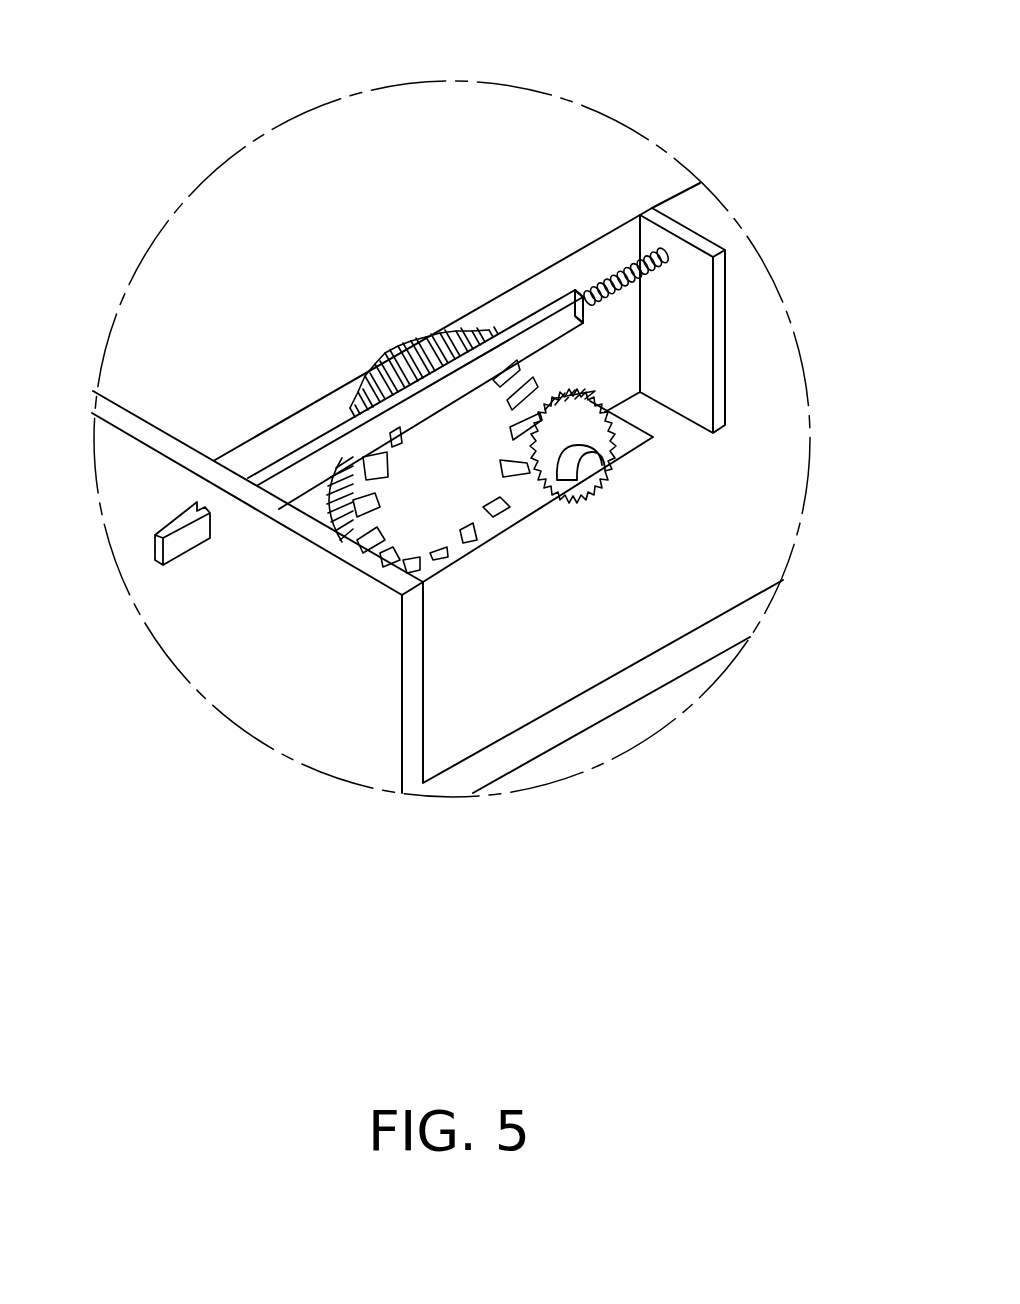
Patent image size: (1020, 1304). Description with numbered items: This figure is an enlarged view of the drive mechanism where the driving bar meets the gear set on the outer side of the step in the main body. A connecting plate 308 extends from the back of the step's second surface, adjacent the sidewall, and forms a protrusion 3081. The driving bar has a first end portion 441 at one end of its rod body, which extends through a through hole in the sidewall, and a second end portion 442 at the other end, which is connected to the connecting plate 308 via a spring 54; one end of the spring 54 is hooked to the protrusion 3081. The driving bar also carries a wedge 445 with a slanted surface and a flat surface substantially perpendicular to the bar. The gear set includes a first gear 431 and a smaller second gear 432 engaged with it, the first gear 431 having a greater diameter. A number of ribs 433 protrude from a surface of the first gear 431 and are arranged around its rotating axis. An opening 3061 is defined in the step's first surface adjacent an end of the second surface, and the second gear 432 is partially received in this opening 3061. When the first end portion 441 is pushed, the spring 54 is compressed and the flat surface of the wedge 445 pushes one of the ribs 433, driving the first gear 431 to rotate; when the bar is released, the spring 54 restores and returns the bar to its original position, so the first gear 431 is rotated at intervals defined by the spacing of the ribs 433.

The connecting plate 308 is at (687, 307).
The protrusion 3081 is at (673, 252).
The second end portion 442 is at (563, 318).
The spring 54 is at (560, 317).
The wedge 445 is at (428, 345).
The first gear 431 is at (437, 500).
The rib 433 is at (500, 510).
The second gear 432 is at (597, 457).
The opening 3061 is at (633, 440).
The first end portion 441 is at (170, 548).